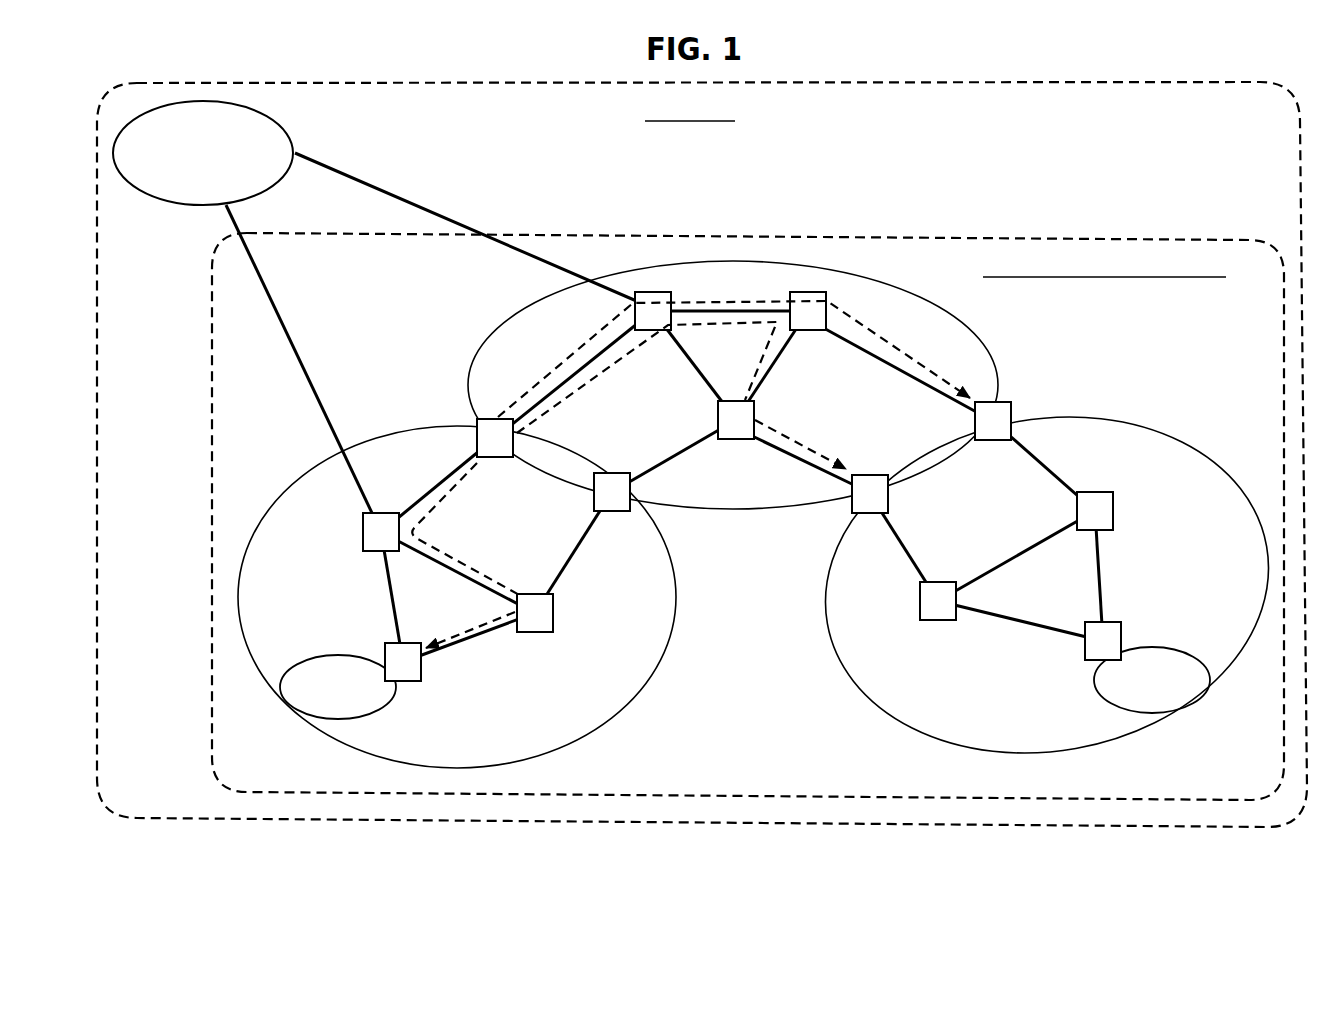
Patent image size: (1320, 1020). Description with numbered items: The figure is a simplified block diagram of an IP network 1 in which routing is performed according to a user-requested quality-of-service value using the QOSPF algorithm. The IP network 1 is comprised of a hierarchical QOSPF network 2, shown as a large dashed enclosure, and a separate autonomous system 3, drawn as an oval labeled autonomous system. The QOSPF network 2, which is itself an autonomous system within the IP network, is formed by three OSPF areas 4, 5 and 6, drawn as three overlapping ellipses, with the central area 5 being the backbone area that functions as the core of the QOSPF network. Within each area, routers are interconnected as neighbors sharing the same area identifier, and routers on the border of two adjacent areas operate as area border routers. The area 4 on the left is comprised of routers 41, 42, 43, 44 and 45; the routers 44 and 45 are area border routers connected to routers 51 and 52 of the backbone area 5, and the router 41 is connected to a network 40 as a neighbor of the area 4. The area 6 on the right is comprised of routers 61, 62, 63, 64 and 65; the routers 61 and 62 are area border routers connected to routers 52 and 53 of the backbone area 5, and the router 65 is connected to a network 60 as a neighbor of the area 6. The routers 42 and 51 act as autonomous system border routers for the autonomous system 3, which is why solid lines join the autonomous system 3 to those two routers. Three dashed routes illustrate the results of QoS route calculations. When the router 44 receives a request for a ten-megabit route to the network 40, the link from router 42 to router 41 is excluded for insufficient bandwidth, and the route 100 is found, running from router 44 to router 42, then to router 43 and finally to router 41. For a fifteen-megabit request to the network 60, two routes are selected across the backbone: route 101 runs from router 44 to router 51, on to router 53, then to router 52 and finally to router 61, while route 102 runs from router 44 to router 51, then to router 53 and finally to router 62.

The IP network 1 is at (831, 83).
The hierarchical QOSPF network 2 is at (706, 233).
The autonomous system 3 is at (175, 205).
The area 4 is at (392, 440).
The backbone area 5 is at (747, 509).
The area 6 is at (1084, 418).
The network 40 is at (323, 655).
The router 41 is at (396, 683).
The router 42 is at (377, 512).
The router 43 is at (538, 634).
The router 44 is at (496, 459).
The router 45 is at (610, 513).
The router 51 is at (665, 332).
The router 52 is at (737, 441).
The router 53 is at (811, 332).
The network 60 is at (1165, 653).
The router 61 is at (868, 515).
The router 62 is at (990, 442).
The router 63 is at (935, 622).
The router 64 is at (1091, 491).
The router 65 is at (1115, 623).
The route 100 is at (462, 567).
The route 101 is at (727, 324).
The route 102 is at (724, 306).